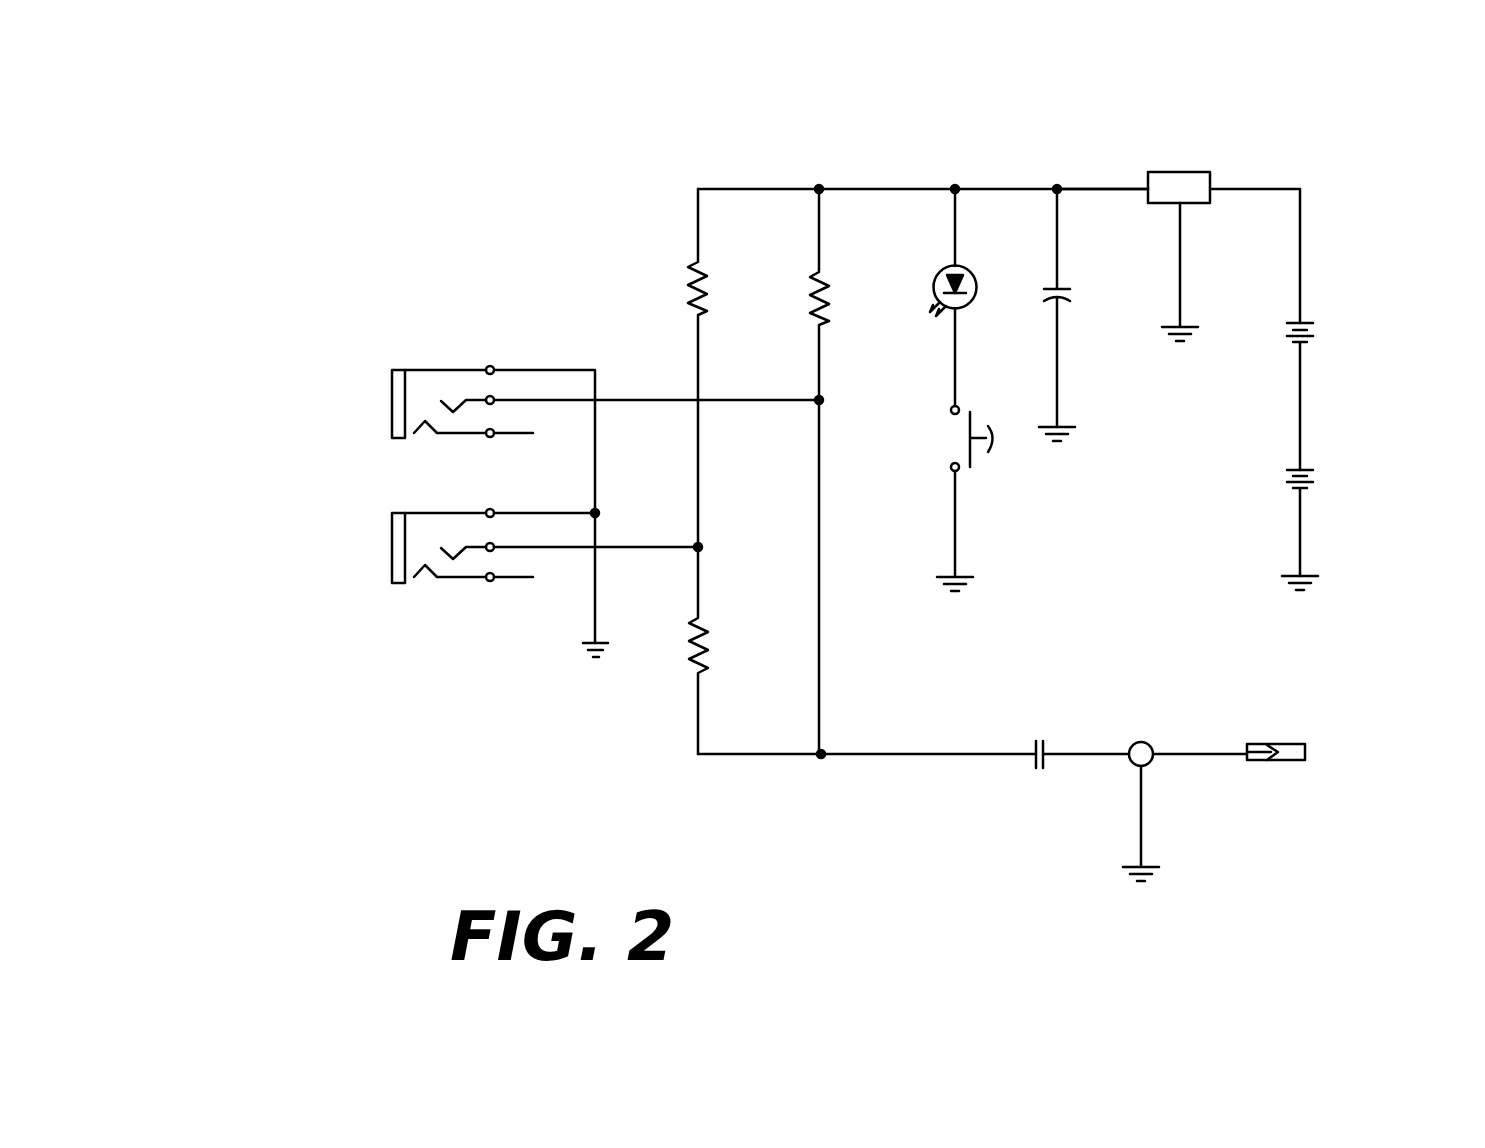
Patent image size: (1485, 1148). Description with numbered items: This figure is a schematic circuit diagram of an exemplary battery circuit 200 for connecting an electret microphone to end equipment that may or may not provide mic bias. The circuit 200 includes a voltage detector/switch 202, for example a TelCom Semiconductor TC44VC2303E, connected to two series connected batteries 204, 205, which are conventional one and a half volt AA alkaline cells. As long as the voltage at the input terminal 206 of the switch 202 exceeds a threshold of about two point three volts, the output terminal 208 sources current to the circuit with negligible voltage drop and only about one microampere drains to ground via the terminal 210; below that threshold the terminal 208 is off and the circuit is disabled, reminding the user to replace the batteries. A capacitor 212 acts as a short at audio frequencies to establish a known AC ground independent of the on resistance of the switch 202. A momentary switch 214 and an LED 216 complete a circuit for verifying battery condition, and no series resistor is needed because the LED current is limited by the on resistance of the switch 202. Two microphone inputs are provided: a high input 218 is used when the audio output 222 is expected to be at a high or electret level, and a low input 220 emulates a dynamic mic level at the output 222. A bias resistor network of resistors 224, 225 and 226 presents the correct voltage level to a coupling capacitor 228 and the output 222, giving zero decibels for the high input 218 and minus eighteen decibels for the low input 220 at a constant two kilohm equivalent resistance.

The battery circuit 200 is at (674, 160).
The voltage detector/switch 202 is at (1145, 142).
The battery 204 is at (1290, 345).
The battery 205 is at (1290, 490).
The input terminal 1 206 is at (1210, 192).
The output terminal 3 208 is at (1145, 192).
The terminal 2 210 is at (1183, 205).
The capacitor 212 is at (1068, 300).
The momentary switch 214 is at (972, 462).
The LED 216 is at (940, 265).
The high input 218 is at (392, 388).
The low input 220 is at (392, 560).
The audio output 222 is at (1305, 742).
The resistor 224 is at (700, 312).
The resistor 225 is at (690, 665).
The resistor 226 is at (820, 322).
The coupling capacitor 228 is at (1033, 745).